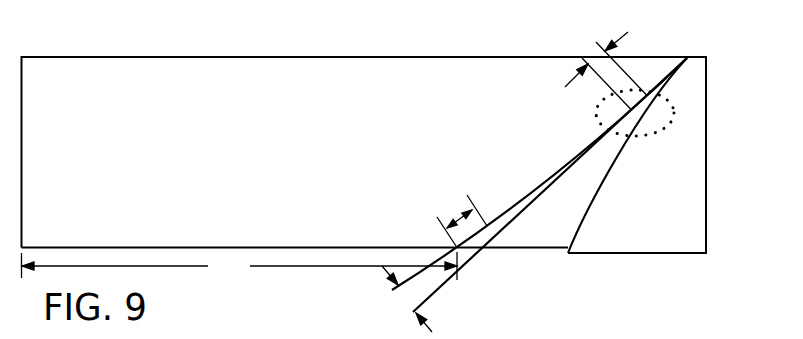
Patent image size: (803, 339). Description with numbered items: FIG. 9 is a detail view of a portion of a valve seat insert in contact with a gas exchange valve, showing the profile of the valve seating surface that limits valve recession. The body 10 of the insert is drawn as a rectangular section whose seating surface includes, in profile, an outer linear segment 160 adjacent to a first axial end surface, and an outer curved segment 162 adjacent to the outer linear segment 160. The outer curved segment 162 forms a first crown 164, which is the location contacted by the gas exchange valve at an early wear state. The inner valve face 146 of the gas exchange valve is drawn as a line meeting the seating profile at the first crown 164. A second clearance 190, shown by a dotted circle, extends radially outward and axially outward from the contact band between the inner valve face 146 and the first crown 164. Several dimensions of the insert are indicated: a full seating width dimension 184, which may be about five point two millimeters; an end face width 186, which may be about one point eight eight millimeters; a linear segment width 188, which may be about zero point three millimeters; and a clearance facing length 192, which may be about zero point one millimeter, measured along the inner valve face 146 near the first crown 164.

The cutting tool body 10 is at (672, 122).
The inner valve face 146 is at (676, 66).
The outer linear segment 160 is at (485, 250).
The outer curved segment 162 is at (533, 197).
The first crown 164 is at (660, 84).
The full seating width dimension 184 is at (407, 298).
The end face width 186 is at (240, 266).
The linear segment width 188 is at (462, 215).
The second clearance 190 is at (640, 108).
The clearance facing length 192 is at (592, 53).